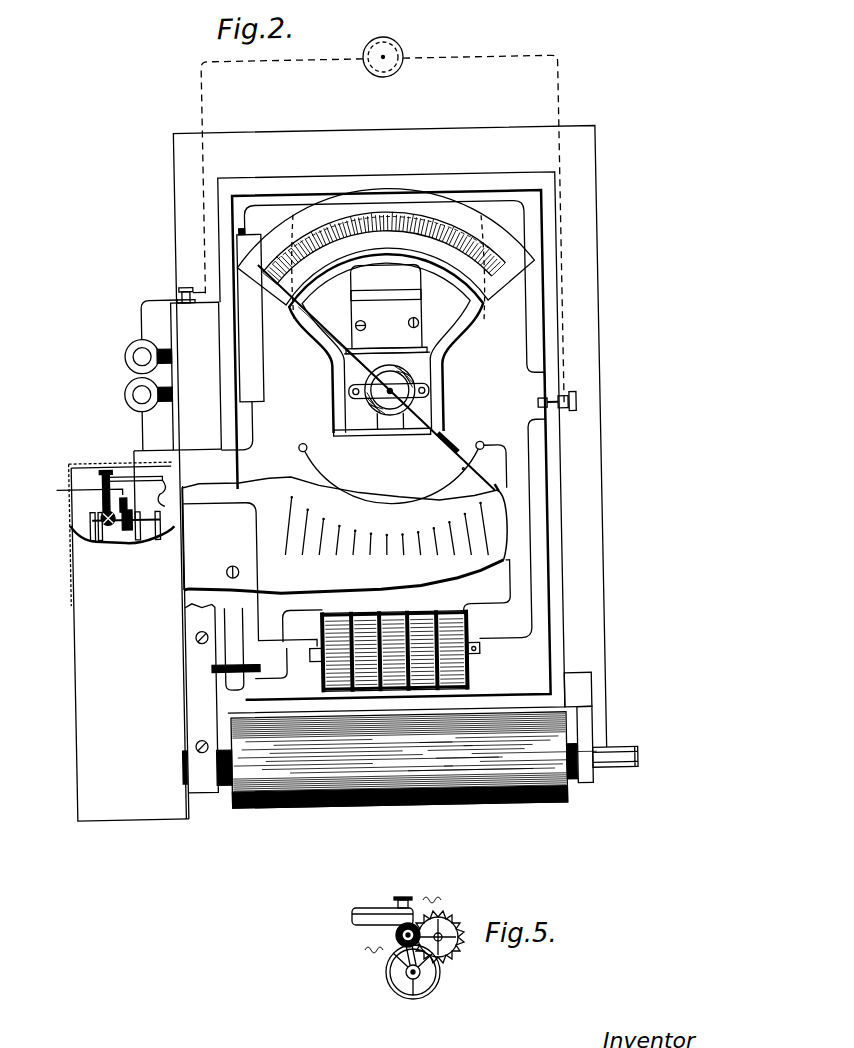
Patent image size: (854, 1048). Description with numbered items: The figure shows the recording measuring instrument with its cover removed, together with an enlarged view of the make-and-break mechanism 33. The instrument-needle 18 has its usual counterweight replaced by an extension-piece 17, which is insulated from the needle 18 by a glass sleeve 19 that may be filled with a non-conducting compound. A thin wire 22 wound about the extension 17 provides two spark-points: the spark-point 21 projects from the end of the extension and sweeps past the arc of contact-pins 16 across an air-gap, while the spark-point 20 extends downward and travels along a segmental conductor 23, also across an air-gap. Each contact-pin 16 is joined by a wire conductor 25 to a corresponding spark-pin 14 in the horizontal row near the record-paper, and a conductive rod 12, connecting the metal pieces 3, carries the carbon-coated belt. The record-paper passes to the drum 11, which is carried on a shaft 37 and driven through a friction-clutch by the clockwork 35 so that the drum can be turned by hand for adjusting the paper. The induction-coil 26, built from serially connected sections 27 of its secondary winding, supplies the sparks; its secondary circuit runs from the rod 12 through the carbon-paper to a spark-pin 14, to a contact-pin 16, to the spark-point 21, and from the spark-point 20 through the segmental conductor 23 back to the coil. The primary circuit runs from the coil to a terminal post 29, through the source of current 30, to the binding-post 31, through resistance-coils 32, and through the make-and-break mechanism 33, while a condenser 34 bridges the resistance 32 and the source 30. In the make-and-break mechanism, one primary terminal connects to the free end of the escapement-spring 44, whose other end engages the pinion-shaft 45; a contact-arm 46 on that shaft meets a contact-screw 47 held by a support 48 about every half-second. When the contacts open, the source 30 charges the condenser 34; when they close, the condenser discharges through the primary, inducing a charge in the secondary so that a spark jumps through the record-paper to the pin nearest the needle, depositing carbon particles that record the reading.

In FIG. 2, the metal pieces 3 is at (199, 787).
In FIG. 2, the drum 11 is at (276, 808).
In FIG. 2, the rod 12 is at (207, 666).
In FIG. 2, the spark-pins 14 is at (365, 554).
In FIG. 2, the contact-pins 16 is at (398, 535).
In FIG. 2, the extension-piece 17 is at (462, 468).
In FIG. 2, the needle 18 is at (420, 419).
In FIG. 2, the glass sleeve 19 is at (442, 447).
In FIG. 2, the spark-point 20 is at (462, 469).
In FIG. 2, the spark-point 21 is at (498, 233).
In FIG. 2, the thin wire 22 is at (490, 488).
In FIG. 2, the segmental conductor 23 is at (316, 462).
In FIG. 2, the wire conductors 25 is at (301, 522).
In FIG. 2, the induction-coil 26 is at (465, 670).
In FIG. 2, the sections 27 is at (439, 616).
In FIG. 2, the terminal post 29 is at (565, 398).
In FIG. 2, the source of current 30 is at (392, 59).
In FIG. 2, the binding-post 31 is at (180, 289).
In FIG. 2, the resistance-coils 32 is at (138, 391).
In FIG. 2, the make-and-break mechanism 33 is at (97, 491).
In FIG. 2, the condenser 34 is at (254, 361).
In FIG. 2, the clockwork 35 is at (92, 537).
In FIG. 2, the shaft 37 is at (179, 791).
In FIG. 2, the escapement-spring 44 is at (101, 495).
In FIG. 5, the escapement-spring 44 is at (395, 941).
In FIG. 5, the pinion-shaft 45 is at (392, 933).
In FIG. 5, the contact-arm 46 is at (418, 915).
In FIG. 5, the contact-screw 47 is at (403, 904).
In FIG. 5, the support 48 is at (357, 910).